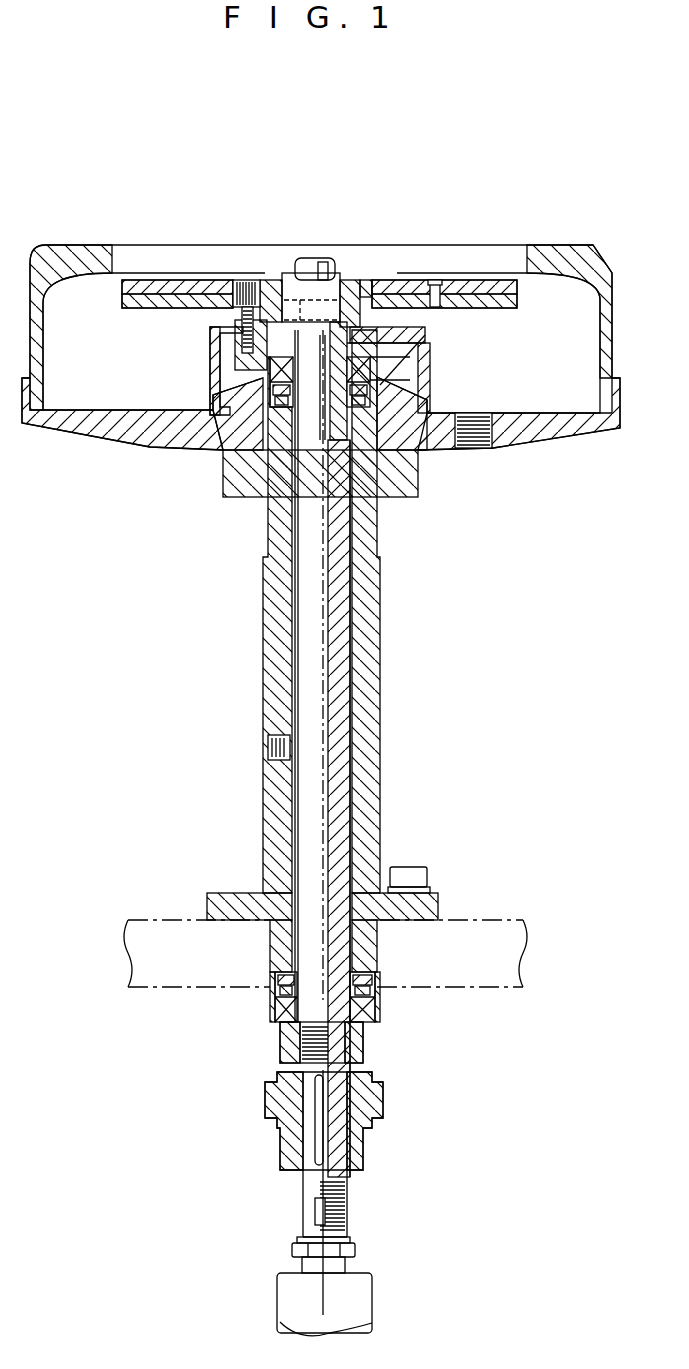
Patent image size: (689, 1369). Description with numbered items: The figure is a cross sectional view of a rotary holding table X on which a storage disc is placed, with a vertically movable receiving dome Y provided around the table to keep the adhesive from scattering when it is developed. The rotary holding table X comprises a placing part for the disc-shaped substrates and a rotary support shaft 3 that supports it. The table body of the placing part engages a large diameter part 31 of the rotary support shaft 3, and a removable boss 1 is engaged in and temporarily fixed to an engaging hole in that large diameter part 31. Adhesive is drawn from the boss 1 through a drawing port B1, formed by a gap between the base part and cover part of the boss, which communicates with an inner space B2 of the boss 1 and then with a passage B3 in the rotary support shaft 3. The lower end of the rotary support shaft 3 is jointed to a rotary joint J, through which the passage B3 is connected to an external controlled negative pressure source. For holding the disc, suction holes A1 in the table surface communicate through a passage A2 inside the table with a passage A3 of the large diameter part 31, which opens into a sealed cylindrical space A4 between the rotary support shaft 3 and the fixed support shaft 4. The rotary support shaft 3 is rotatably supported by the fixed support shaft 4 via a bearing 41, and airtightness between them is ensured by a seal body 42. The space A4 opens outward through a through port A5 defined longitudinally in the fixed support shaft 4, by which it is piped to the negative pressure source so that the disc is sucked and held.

The rotary holding table X is at (407, 211).
The receiving dome Y is at (571, 250).
The boss 1 is at (322, 300).
The drawing port B1 is at (332, 272).
The inner space B2 is at (318, 298).
The passage B3 is at (323, 597).
The suction holes A1 is at (435, 298).
The passage A2 is at (462, 300).
The passage A3 is at (382, 340).
The space A4 is at (340, 592).
The through port A5 is at (268, 760).
The large diameter part 31 is at (398, 336).
The rotary support shaft 3 is at (342, 510).
The fixed support shaft 4 is at (366, 680).
The bearing 41 is at (237, 361).
The seal body 42 is at (272, 393).
The rotary joint J is at (518, 1137).